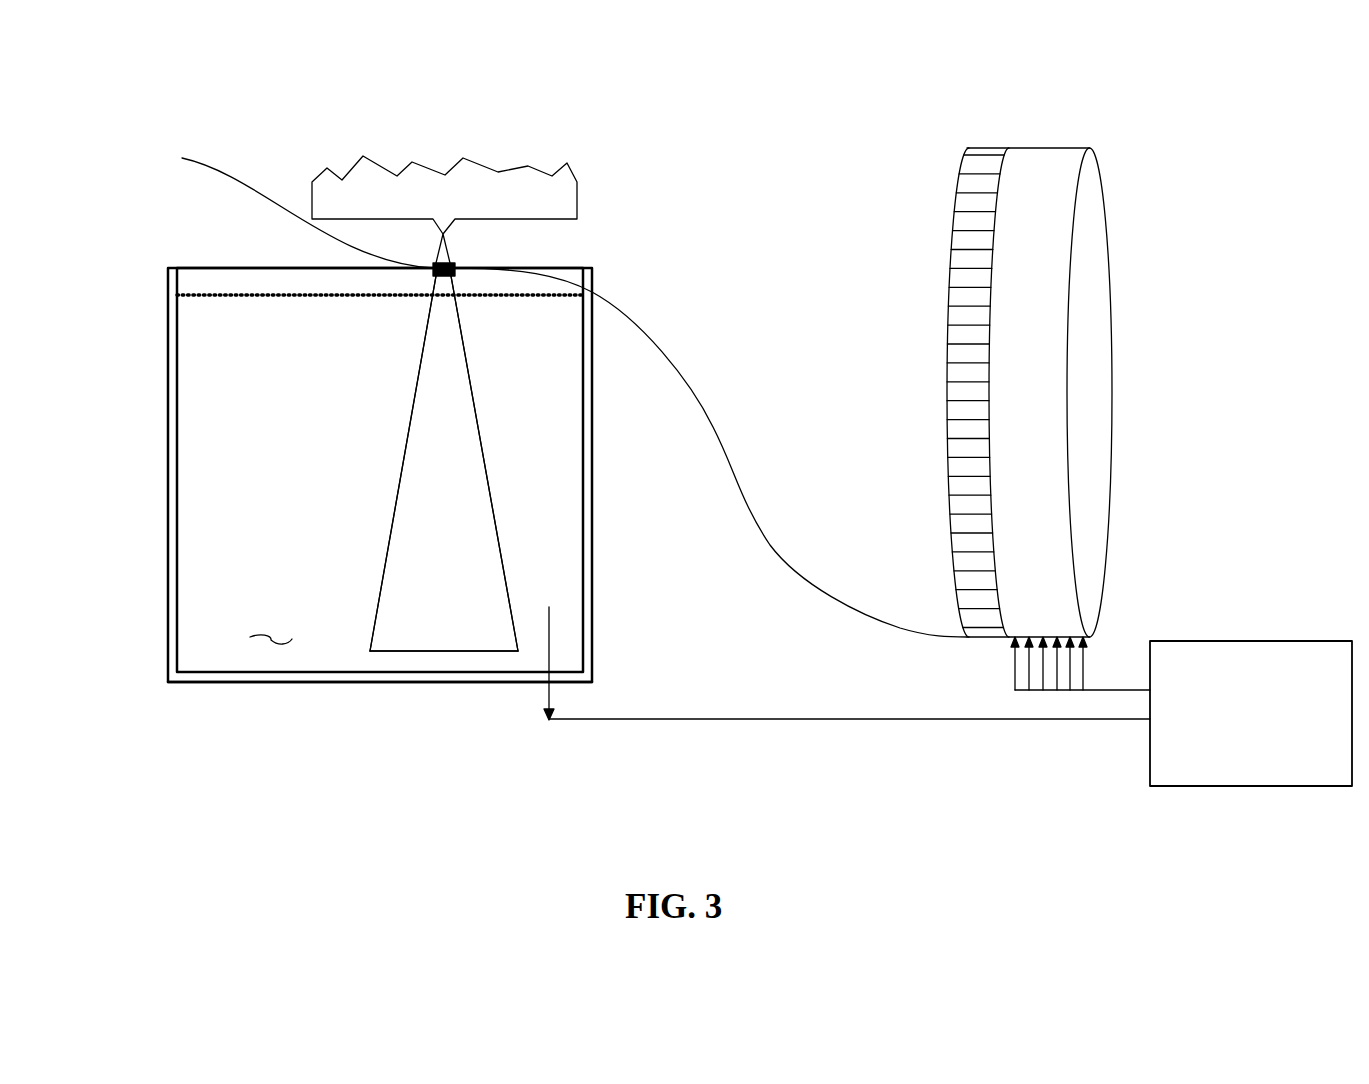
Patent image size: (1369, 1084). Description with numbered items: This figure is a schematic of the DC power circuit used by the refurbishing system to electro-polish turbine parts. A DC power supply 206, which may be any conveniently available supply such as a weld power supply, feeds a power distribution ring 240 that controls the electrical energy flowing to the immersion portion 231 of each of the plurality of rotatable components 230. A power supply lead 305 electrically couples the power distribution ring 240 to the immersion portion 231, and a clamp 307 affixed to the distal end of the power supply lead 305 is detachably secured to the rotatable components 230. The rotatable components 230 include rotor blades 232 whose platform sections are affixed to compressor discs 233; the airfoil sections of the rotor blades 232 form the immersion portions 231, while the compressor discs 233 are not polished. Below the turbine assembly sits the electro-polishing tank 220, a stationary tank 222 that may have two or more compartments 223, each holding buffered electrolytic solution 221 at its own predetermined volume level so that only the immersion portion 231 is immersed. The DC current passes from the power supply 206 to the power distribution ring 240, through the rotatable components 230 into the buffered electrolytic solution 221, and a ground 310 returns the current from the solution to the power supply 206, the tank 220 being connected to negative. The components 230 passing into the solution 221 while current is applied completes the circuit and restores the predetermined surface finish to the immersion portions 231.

The power supply 206 is at (1247, 775).
The electro-polishing tank 220 is at (182, 682).
The buffered electrolytic solution 221 is at (273, 638).
The stationary tank 222 is at (235, 682).
The compartments 223 is at (200, 557).
The rotatable components 230 is at (470, 485).
The immersion portion 231 is at (442, 638).
The rotor blades 232 is at (458, 413).
The compressor discs 233 is at (467, 175).
The power distribution ring 240 is at (1040, 158).
The power supply lead 305 is at (665, 343).
The clamp 307 is at (282, 206).
The ground 310 is at (818, 722).